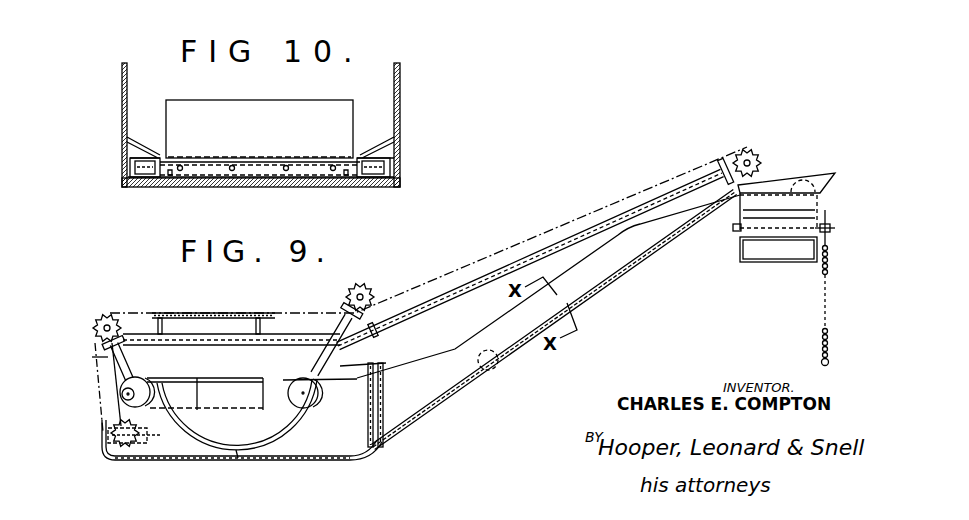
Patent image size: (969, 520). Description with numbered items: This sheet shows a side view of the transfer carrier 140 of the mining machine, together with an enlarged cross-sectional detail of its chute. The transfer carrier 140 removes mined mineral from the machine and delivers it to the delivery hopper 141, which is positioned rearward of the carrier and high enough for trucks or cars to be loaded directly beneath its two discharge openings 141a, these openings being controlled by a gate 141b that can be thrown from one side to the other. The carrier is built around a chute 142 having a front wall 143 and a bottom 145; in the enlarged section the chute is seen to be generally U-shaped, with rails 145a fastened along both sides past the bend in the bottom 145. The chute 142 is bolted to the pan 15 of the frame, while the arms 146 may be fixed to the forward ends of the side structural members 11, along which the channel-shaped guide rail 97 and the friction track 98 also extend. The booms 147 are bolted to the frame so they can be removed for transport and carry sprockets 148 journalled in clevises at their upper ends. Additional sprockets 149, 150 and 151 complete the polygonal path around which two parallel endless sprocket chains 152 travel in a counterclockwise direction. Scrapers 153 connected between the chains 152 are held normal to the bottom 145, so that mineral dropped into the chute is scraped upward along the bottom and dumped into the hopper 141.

In FIG. 9, the side structural members 11 is at (130, 404).
In FIG. 9, the pan 15 is at (258, 433).
In FIG. 9, the guide rail 97 is at (197, 386).
In FIG. 9, the friction track 98 is at (232, 378).
In FIG. 9, the transfer carrier 140 is at (460, 335).
In FIG. 9, the delivery hopper 141 is at (780, 180).
In FIG. 9, the discharge openings 141a is at (783, 254).
In FIG. 9, the gate 141b is at (842, 276).
In FIG. 10, the chute 142 is at (400, 90).
In FIG. 9, the chute 142 is at (422, 386).
In FIG. 9, the front wall 143 is at (170, 443).
In FIG. 10, the bottom 145 is at (252, 186).
In FIG. 9, the bottom 145 is at (608, 288).
In FIG. 10, the rails 145a is at (137, 140).
In FIG. 9, the rails 145a is at (500, 362).
In FIG. 9, the arms 146 is at (130, 368).
In FIG. 9, the booms 147 is at (517, 264).
In FIG. 9, the sprockets 148 is at (740, 158).
In FIG. 9, the sprocket 149 is at (350, 291).
In FIG. 9, the sprocket 150 is at (101, 318).
In FIG. 9, the sprocket 151 is at (110, 418).
In FIG. 10, the endless sprocket chains 152 is at (146, 176).
In FIG. 9, the endless sprocket chains 152 is at (215, 315).
In FIG. 10, the scrapers 153 is at (270, 140).
In FIG. 9, the scrapers 153 is at (152, 315).